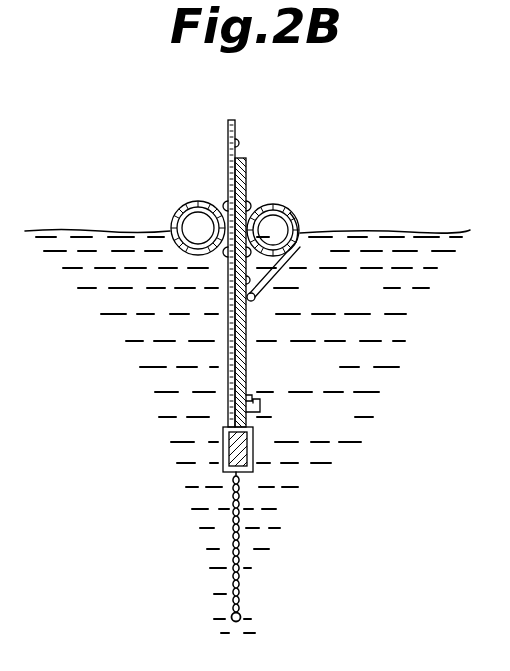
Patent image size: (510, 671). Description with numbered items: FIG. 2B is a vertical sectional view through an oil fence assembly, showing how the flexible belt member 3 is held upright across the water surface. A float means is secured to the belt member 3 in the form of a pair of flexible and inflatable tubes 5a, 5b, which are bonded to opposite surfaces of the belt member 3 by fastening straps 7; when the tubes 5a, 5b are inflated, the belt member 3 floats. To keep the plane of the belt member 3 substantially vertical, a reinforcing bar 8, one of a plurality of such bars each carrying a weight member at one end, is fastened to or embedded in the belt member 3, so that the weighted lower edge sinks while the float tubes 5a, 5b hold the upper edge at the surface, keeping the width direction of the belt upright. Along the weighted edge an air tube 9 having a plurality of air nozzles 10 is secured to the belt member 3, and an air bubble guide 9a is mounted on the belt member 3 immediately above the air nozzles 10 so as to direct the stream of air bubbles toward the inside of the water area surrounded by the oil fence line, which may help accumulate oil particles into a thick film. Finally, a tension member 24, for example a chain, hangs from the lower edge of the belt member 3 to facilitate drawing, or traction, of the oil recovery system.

The belt member 3 is at (247, 159).
The reinforcing bar 8 is at (228, 190).
The fastening strap 7 is at (249, 195).
The flexible and inflatable tube 5a is at (192, 204).
The flexible and inflatable tube 5b is at (285, 205).
The air bubble guide 9a is at (272, 272).
The air nozzle 10 is at (261, 398).
The air tube 9 is at (262, 414).
The tension member 24 is at (241, 616).